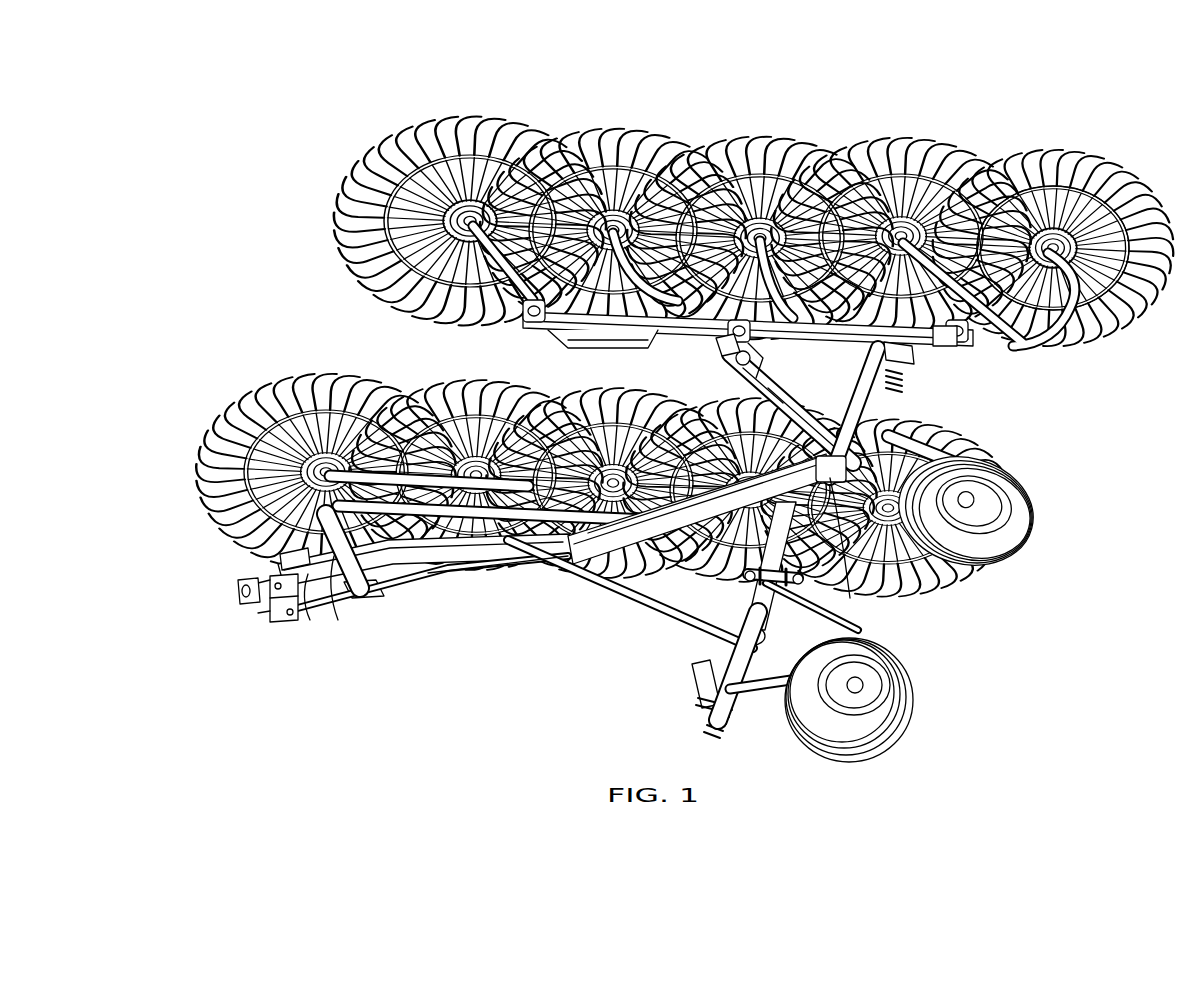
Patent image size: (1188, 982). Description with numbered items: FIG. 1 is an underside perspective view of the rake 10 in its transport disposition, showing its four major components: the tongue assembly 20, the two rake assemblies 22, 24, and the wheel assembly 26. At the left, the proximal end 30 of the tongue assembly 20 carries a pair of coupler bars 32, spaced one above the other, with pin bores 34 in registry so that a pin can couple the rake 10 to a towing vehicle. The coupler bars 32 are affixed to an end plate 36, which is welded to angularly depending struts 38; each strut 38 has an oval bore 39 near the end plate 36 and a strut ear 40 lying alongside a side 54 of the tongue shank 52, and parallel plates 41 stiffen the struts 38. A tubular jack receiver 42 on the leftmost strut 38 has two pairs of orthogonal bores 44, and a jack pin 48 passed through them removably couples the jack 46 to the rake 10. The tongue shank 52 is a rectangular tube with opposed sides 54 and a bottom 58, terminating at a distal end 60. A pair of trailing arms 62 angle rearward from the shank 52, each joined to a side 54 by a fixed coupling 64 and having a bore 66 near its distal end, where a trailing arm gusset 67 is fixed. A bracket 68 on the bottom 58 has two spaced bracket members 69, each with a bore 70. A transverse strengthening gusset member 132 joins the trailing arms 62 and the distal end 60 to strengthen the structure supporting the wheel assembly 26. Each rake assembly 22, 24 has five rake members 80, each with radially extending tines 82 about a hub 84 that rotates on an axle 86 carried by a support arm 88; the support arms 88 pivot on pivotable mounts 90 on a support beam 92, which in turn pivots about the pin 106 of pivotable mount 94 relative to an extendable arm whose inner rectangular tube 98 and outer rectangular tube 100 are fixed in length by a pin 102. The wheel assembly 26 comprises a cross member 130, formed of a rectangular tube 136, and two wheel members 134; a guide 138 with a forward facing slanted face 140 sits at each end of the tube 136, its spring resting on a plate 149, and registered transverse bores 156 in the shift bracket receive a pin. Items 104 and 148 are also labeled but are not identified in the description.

The rake 10 is at (322, 158).
The tongue assembly 20 is at (554, 551).
The rake assembly 22 is at (736, 228).
The rake assembly 24 is at (596, 467).
The wheel assembly 26 is at (738, 686).
The proximal end 30 is at (292, 608).
The coupler bars 32 is at (262, 578).
The pin bores 34 is at (238, 584).
The end plate 36 is at (270, 604).
The depending struts 38 is at (330, 612).
The oval bore 39 is at (268, 566).
The strut ear 40 is at (376, 548).
The plates 41 is at (303, 612).
The jack receiver 42 is at (280, 545).
The bores 44 is at (332, 582).
The jack 46 is at (348, 588).
The jack pin 48 is at (400, 558).
The tongue shank 52 is at (445, 558).
The sides 54 is at (545, 535).
The bottom 58 is at (470, 558).
The distal end 60 is at (770, 532).
The trailing arms 62 is at (783, 473).
The fixed coupling 64 is at (560, 545).
The bore 66 is at (835, 555).
The trailing arm gusset 67 is at (732, 624).
The bracket 68 is at (740, 570).
The bracket members 69 is at (738, 562).
The bore 70 is at (765, 572).
The rake members 80 is at (425, 150).
The tines 82 is at (1130, 162).
The hub 84 is at (1032, 178).
The axle 86 is at (378, 218).
The support arm 88 is at (490, 250).
The pivotable mount 90 is at (520, 302).
The support beam 92 is at (940, 330).
The pivotable mount 94 is at (720, 333).
The inner rectangular tube 98 is at (745, 346).
The outer rectangular tube 100 is at (822, 398).
The pin 102 is at (780, 372).
The hydraulic cylinder 104 is at (790, 347).
The pin 106 is at (786, 346).
The cross member 130 is at (966, 479).
The strengthening gusset member 132 is at (783, 512).
The wheel members 134 is at (904, 698).
The tube 136 is at (882, 428).
The guide 138 is at (690, 694).
The slanted face 140 is at (912, 336).
The caster post 148 is at (712, 722).
The plate 149 is at (906, 376).
The transverse bore 156 is at (842, 592).